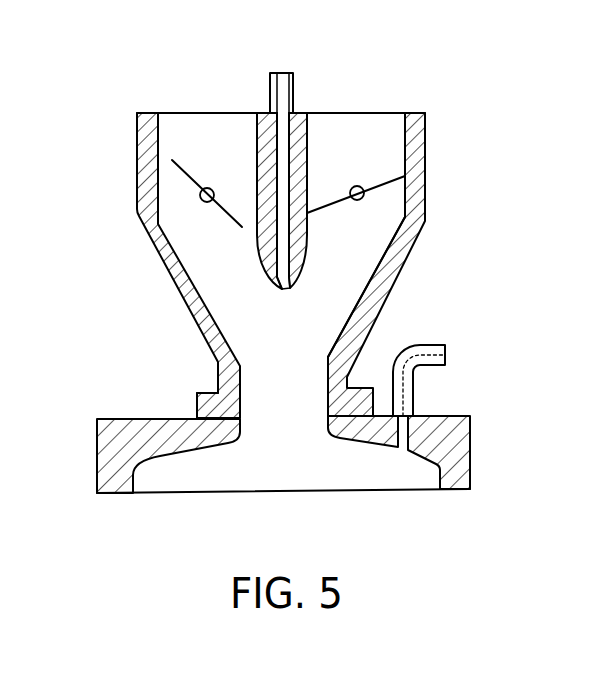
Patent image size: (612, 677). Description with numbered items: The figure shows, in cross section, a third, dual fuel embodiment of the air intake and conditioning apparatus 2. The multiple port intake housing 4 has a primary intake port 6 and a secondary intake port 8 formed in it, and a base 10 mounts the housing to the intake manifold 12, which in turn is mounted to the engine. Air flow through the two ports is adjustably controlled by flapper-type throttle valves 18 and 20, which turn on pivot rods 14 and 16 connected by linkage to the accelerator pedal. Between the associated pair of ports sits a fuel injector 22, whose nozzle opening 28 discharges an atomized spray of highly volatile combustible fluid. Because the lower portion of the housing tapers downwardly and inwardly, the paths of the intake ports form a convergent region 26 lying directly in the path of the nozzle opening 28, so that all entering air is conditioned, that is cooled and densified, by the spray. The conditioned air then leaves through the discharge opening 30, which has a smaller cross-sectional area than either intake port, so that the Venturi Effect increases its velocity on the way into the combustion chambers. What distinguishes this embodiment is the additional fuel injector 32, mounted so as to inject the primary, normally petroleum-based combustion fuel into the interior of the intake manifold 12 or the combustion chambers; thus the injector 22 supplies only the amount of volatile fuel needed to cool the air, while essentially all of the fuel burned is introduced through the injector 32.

The air intake and conditioning apparatus 2 is at (133, 106).
The multiple port intake housing 4 is at (432, 161).
The primary intake port 6 is at (215, 122).
The secondary intake port 8 is at (357, 120).
The base 10 is at (207, 392).
The intake manifold 12 is at (103, 418).
The pivot rod 14 is at (200, 200).
The pivot rod 16 is at (364, 197).
The flapper-type throttle valve 18 is at (176, 172).
The flapper-type throttle valve 20 is at (364, 193).
The fuel injector 22 is at (293, 86).
The convergent region 26 is at (290, 347).
The nozzle opening 28 is at (283, 284).
The discharge opening 30 is at (326, 402).
The fuel injector 32 is at (417, 388).